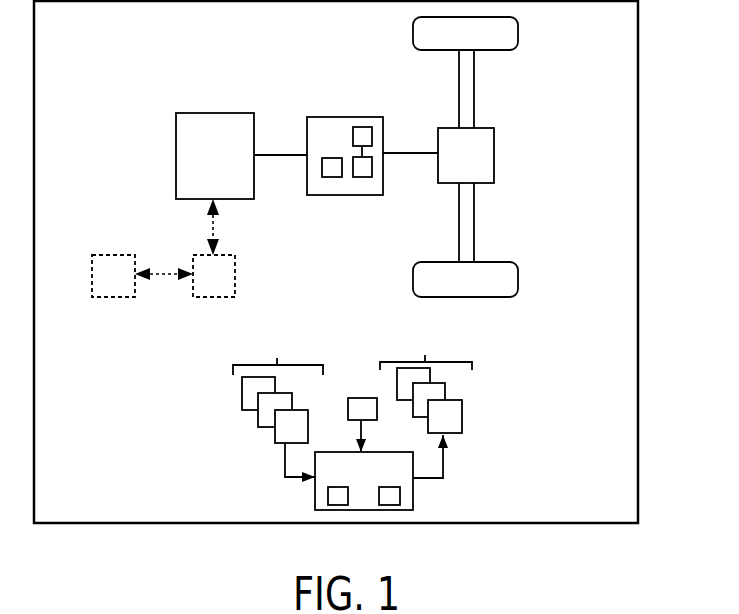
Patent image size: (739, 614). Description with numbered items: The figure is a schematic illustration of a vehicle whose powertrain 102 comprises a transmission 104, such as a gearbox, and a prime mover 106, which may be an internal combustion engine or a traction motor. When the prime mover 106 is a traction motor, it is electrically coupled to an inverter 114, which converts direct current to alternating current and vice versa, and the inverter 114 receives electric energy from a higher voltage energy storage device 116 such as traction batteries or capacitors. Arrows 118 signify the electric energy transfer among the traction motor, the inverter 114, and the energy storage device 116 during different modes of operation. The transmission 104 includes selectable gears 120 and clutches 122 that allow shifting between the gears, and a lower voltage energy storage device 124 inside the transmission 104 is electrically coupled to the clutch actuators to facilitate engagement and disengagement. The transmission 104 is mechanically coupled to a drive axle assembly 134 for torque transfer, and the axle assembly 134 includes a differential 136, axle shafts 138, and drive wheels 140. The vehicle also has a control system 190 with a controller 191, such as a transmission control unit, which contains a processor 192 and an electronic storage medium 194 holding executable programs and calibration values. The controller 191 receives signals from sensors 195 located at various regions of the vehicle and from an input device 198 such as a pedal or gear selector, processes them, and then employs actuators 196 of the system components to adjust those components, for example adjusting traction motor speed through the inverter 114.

The powertrain 102 is at (80, 348).
The transmission 104 is at (307, 137).
The prime mover 106 is at (209, 98).
The inverter 114 is at (213, 297).
The energy storage device 116 is at (101, 297).
The arrows 118 is at (216, 227).
The selectable gears 120 is at (332, 178).
The clutches 122 is at (362, 178).
The lower voltage energy storage device 124 is at (360, 127).
The drive axle assembly 134 is at (418, 117).
The differential 136 is at (494, 153).
The axle shafts 138 is at (474, 217).
The drive wheels 140 is at (518, 278).
The control system 190 is at (527, 388).
The controller 191 is at (377, 484).
The processor 192 is at (328, 497).
The electronic storage medium 194 is at (400, 496).
The sensors 195 is at (278, 406).
The actuators 196 is at (426, 404).
The input device 198 is at (357, 397).